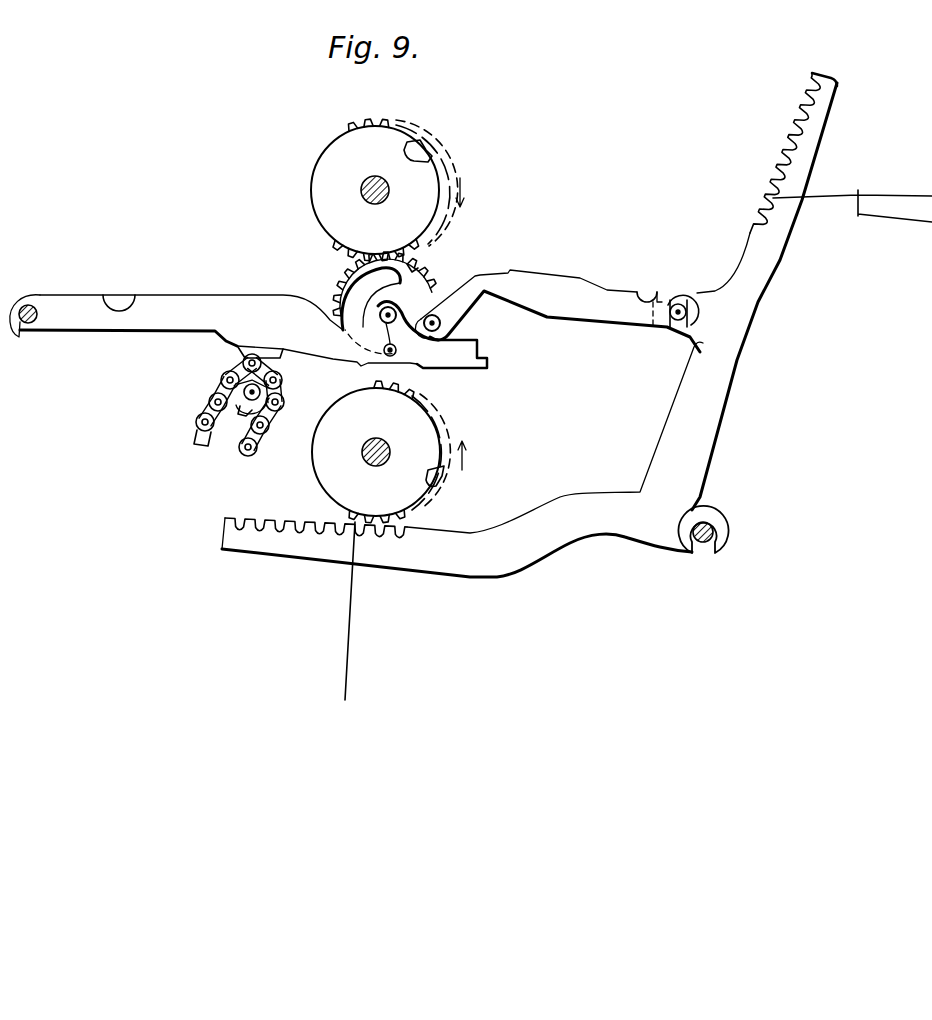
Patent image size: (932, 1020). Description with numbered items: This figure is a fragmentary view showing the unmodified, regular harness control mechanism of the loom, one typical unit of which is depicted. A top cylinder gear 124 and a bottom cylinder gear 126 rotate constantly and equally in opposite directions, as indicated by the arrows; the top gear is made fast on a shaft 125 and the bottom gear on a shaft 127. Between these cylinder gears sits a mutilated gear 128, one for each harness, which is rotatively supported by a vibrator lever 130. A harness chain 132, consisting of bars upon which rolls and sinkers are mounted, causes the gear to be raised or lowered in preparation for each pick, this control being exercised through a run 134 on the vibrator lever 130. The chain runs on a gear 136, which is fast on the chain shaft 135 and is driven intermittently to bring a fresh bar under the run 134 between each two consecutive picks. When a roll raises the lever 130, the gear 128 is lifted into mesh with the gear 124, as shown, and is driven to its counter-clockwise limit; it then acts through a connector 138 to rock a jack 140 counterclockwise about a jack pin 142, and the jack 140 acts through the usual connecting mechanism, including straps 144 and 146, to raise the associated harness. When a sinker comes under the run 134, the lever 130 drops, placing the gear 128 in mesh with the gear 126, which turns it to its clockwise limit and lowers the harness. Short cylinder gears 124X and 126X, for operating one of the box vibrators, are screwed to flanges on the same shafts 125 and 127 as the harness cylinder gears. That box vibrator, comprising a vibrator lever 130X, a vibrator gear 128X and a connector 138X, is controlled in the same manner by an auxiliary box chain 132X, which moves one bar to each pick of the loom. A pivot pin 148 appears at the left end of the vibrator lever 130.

The top cylinder gear 124 is at (331, 155).
The short cylinder gear 124X is at (413, 153).
The shaft 125 is at (366, 200).
The bottom cylinder gear 126 is at (417, 421).
The short cylinder gear 126X is at (432, 477).
The shaft 127 is at (372, 456).
The mutilated gear 128 is at (423, 285).
The vibrator gear 128X is at (420, 273).
The vibrator lever 130 is at (178, 295).
The vibrator lever 130X is at (120, 293).
The harness chain 132 is at (196, 426).
The auxiliary box chain 132X is at (201, 446).
The run 134 is at (240, 349).
The chain shaft 135 is at (243, 390).
The gear 136 is at (238, 414).
The connector 138 is at (622, 293).
The connector 138X is at (648, 293).
The jack 140 is at (598, 499).
The jack pin 142 is at (703, 547).
The strap 144 is at (830, 198).
The strap 146 is at (352, 628).
The left arm pivot pin 148 is at (30, 326).